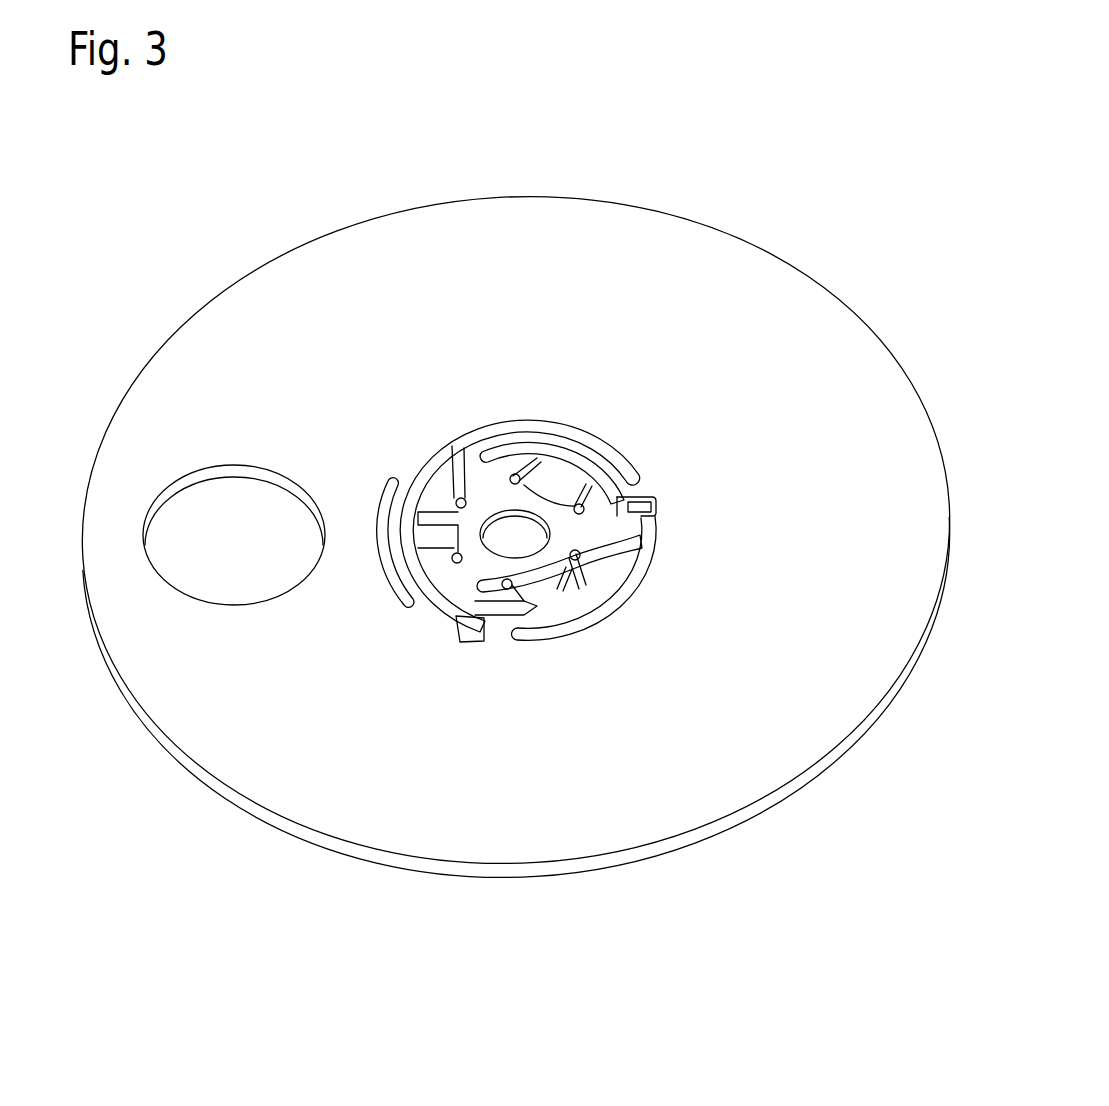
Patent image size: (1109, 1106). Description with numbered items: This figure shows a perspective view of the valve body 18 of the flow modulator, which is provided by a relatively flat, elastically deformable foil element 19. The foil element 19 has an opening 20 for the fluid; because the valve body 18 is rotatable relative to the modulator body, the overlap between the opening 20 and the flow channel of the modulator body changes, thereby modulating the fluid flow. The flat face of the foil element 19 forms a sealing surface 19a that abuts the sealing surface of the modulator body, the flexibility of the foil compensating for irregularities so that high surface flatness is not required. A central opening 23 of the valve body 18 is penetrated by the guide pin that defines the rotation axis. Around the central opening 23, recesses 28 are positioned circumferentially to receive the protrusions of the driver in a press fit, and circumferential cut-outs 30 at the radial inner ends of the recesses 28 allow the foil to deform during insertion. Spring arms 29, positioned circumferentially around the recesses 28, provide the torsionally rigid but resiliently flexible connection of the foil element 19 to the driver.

The valve body 18 is at (142, 814).
The foil element 19 is at (734, 275).
The sealing surface 19a is at (883, 417).
The opening 20 is at (195, 520).
The central opening 23 is at (505, 520).
The recesses 28 is at (427, 517).
The spring arms 29 is at (527, 442).
The circumferential cut-outs 30 is at (462, 482).